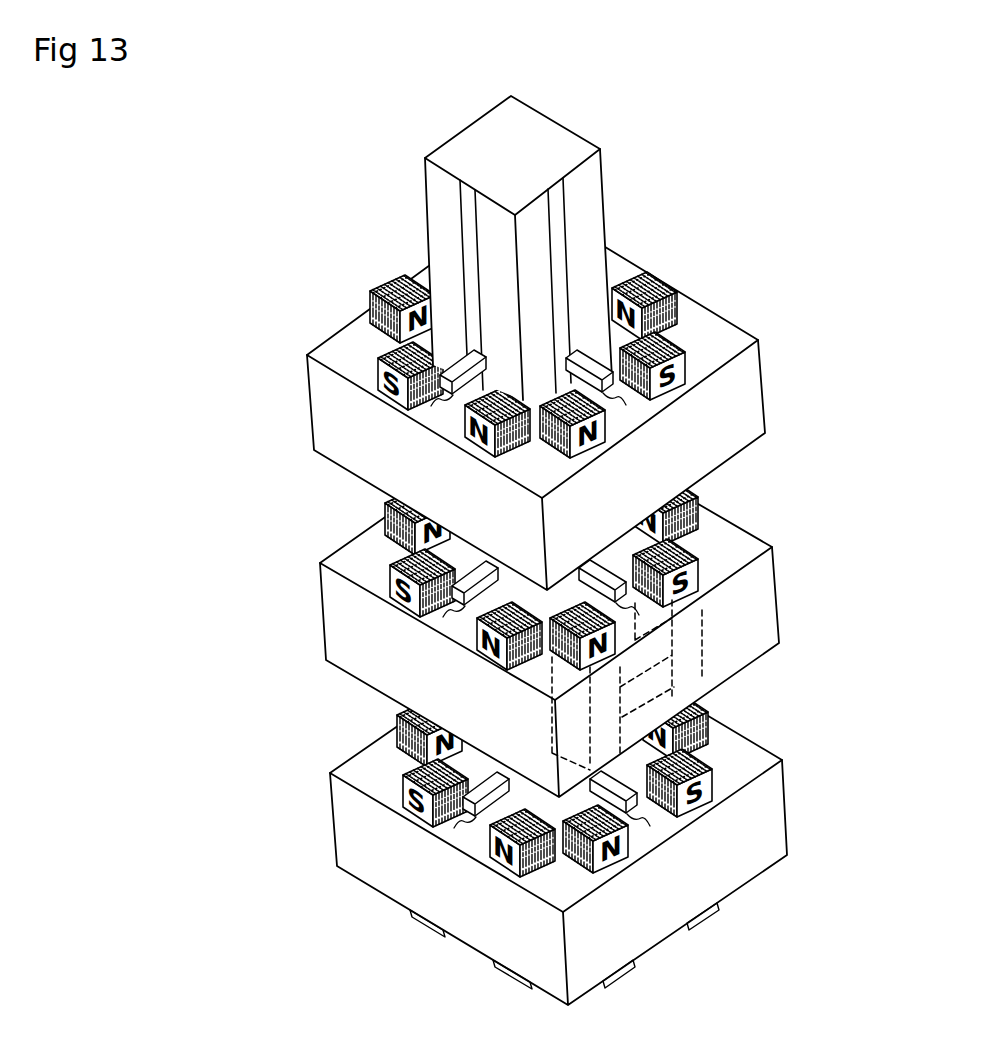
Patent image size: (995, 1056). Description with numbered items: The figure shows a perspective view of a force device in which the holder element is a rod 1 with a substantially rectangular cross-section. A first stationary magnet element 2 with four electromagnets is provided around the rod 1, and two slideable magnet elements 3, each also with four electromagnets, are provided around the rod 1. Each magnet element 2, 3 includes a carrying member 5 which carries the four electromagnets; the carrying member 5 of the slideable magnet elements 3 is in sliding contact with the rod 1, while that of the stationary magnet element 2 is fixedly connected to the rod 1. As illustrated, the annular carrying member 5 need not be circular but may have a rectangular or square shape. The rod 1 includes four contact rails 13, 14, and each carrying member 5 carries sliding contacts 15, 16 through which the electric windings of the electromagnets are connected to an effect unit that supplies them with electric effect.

The rod 1 is at (437, 248).
The stationary magnet element 2 is at (330, 805).
The slidable magnet element 3 is at (305, 363).
The carrying member 5 is at (358, 431).
The contact rail 13 is at (555, 197).
The contact rail 14 is at (470, 258).
The sliding contact 15 is at (598, 782).
The sliding contact 16 is at (510, 805).